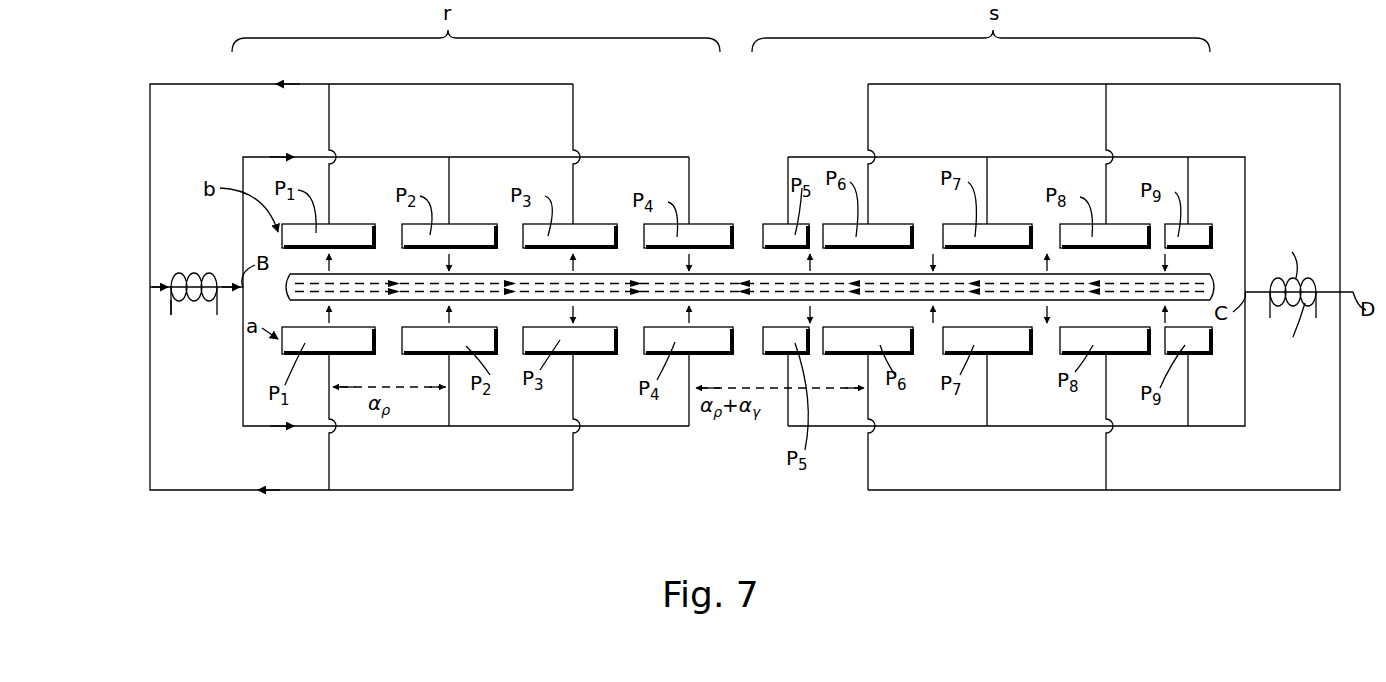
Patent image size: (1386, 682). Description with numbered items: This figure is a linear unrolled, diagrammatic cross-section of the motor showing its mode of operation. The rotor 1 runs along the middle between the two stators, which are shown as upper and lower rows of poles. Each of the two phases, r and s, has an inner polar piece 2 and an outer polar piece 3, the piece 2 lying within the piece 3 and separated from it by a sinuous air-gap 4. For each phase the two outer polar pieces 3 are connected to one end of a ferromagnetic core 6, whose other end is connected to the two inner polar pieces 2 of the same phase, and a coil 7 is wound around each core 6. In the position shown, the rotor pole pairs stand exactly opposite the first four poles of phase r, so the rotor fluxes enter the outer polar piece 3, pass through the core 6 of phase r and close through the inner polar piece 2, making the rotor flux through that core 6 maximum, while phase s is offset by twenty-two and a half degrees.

The rotor 1 is at (752, 286).
The inner polar piece 2 is at (651, 157).
The outer polar piece 3 is at (436, 62).
The sinuous air-gap 4 is at (388, 235).
The core 6 is at (213, 300).
The coil 7 is at (195, 273).